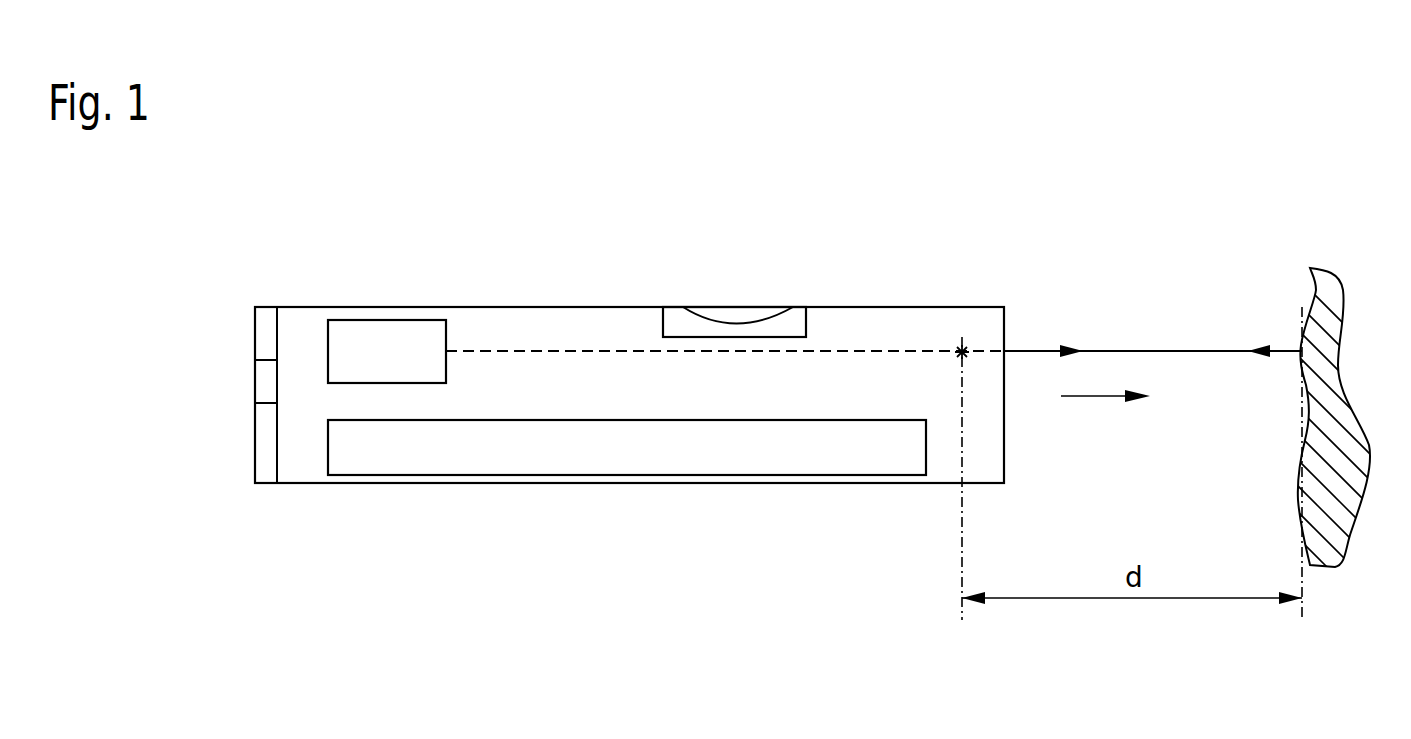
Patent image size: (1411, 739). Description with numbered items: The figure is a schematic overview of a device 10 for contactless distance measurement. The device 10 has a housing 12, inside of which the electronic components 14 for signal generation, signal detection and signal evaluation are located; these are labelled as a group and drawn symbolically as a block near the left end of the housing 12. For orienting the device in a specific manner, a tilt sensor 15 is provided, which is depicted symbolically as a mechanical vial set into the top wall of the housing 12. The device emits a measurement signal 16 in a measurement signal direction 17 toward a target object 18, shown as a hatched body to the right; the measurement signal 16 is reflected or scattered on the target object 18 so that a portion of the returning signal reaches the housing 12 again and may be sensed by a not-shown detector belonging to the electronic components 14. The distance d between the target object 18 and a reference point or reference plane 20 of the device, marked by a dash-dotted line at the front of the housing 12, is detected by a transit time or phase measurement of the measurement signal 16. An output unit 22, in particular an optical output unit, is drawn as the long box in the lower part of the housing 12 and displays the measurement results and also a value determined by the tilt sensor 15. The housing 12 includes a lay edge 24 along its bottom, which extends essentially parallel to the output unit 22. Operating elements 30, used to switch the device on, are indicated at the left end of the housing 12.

The device 10 is at (592, 243).
The housing 12 is at (880, 322).
The electronic components 14 is at (390, 330).
The tilt sensor 15 is at (797, 316).
The measurement signal 16 is at (1201, 322).
The measurement signal direction 17 is at (1106, 418).
The target object 18 is at (1362, 580).
The reference point 20 is at (992, 303).
The output unit 22 is at (519, 460).
The lay edge 24 is at (858, 498).
The operating elements 30 is at (262, 331).